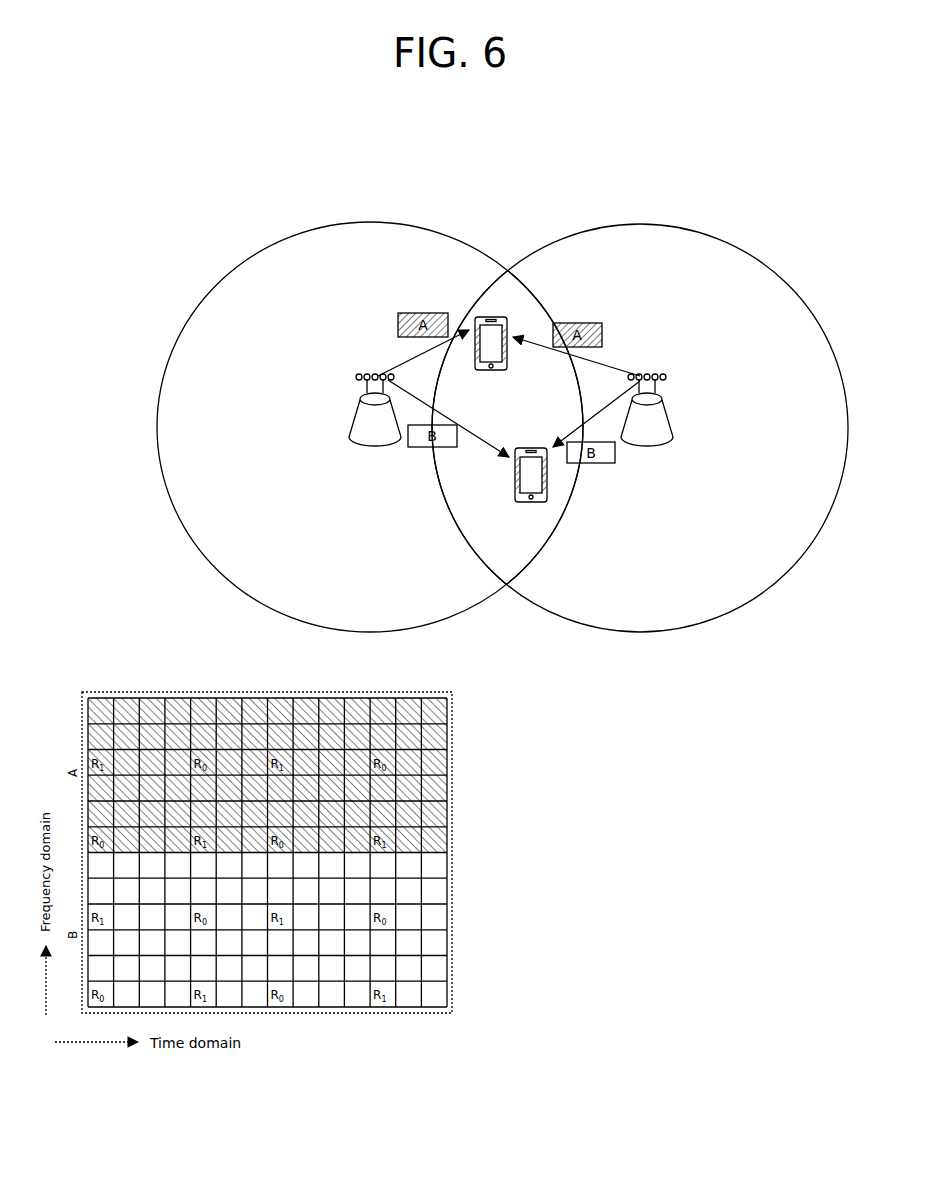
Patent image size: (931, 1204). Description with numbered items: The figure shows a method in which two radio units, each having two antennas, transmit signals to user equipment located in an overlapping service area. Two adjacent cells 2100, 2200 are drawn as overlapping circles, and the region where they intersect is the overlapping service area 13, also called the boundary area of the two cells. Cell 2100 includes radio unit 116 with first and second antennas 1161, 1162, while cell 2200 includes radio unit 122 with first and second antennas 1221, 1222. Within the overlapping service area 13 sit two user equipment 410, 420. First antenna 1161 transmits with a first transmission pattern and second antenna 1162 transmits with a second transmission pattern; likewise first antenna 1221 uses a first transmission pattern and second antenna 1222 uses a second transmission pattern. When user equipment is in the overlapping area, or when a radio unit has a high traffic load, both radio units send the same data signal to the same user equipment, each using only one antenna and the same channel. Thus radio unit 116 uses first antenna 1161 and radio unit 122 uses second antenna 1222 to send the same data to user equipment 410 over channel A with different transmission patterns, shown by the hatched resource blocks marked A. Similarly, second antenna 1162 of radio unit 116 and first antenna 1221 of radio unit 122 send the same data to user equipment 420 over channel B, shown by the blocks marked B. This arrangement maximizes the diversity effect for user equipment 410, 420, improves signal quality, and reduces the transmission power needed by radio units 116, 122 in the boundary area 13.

The cell 2100 is at (452, 239).
The cell 2200 is at (723, 241).
The radio unit 116 is at (350, 424).
The first antenna 1161 is at (358, 373).
The second antenna 1162 is at (378, 372).
The radio unit 122 is at (673, 422).
The first antenna 1221 is at (633, 372).
The second antenna 1222 is at (654, 372).
The user equipment 410 is at (490, 372).
The user equipment 420 is at (514, 479).
The overlapping service area 13 is at (500, 560).